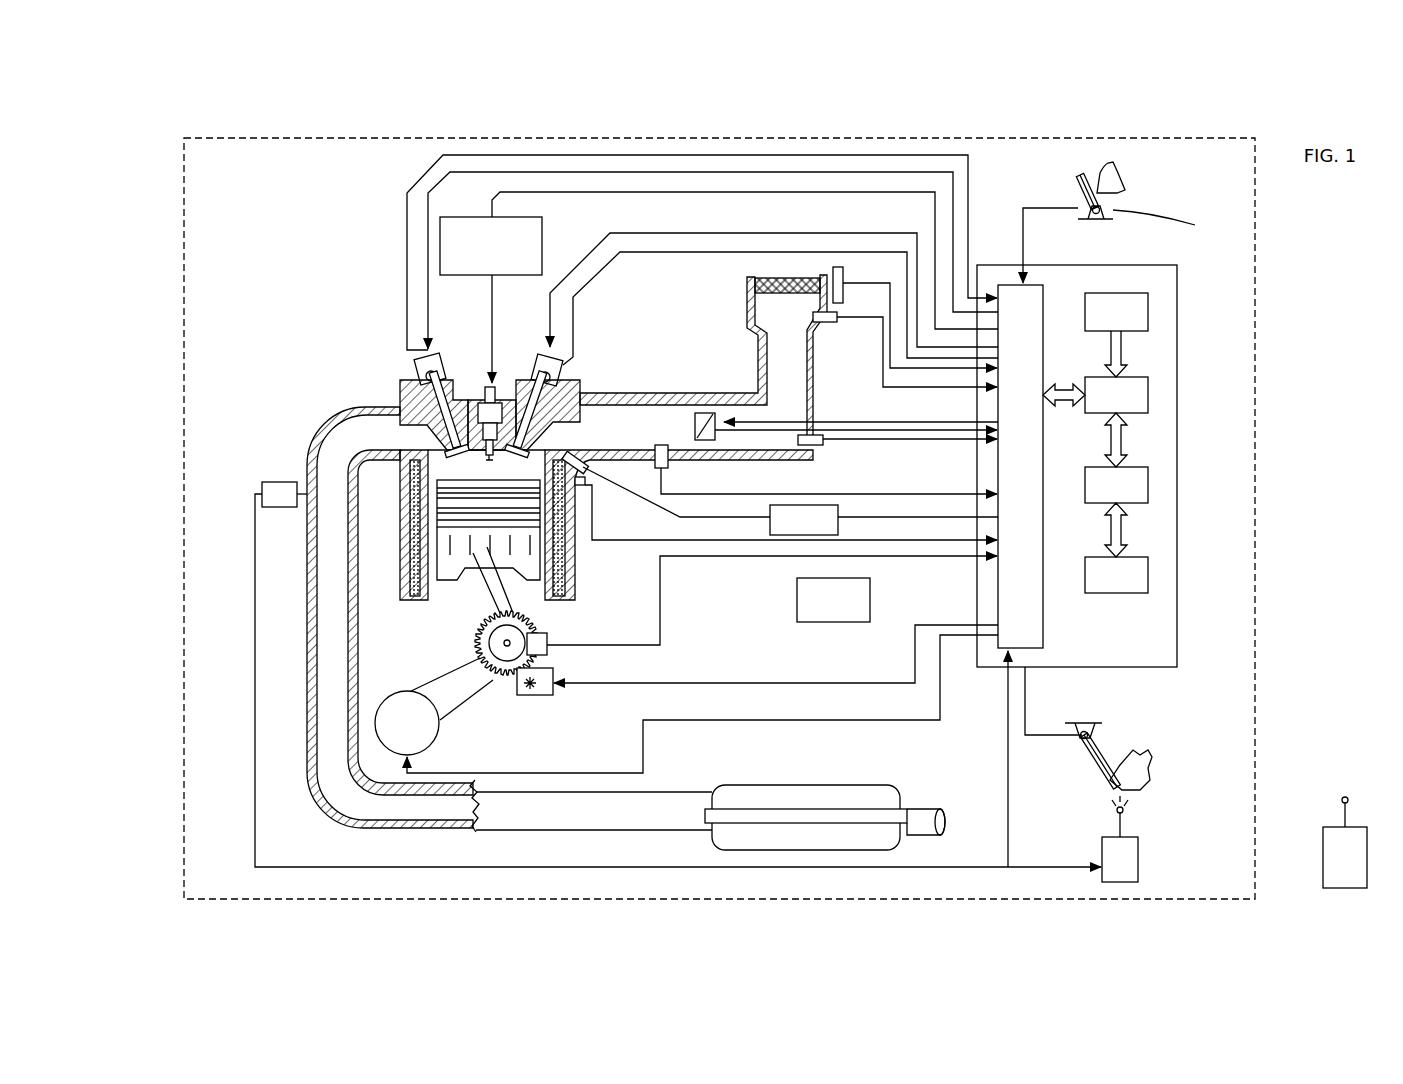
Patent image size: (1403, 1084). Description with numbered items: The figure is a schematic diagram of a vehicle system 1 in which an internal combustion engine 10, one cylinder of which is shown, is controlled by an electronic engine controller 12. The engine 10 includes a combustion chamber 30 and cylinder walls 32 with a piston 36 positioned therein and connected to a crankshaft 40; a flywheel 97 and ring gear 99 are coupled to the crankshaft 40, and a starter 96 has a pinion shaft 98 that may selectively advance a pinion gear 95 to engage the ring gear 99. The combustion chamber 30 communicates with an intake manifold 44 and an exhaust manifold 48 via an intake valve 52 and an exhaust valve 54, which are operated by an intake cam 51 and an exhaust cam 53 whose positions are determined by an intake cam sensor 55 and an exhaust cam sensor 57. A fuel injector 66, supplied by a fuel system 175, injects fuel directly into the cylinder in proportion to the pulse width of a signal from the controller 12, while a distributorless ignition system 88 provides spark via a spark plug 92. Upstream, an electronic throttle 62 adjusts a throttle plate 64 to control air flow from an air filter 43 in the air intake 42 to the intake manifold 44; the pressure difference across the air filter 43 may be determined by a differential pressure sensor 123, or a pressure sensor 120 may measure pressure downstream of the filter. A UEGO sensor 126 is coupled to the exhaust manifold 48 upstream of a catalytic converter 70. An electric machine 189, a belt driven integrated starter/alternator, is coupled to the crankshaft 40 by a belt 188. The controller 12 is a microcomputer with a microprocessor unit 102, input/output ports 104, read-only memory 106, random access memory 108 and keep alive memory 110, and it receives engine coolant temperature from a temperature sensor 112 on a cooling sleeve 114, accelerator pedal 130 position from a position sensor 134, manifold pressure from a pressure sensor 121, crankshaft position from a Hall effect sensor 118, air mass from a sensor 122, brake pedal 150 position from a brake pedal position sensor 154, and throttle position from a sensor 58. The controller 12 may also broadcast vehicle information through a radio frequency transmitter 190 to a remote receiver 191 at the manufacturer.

The vehicle system 1 is at (1262, 415).
The internal combustion engine 10 is at (338, 335).
The electronic engine controller 12 is at (1116, 437).
The combustion chamber 30 is at (487, 467).
The cylinder walls 32 is at (599, 550).
The piston 36 is at (470, 565).
The crankshaft 40 is at (517, 635).
The air intake 42 is at (703, 351).
The air filter 43 is at (750, 283).
The intake manifold 44 is at (617, 430).
The exhaust manifold 48 is at (509, 619).
The intake cam 51 is at (540, 350).
The intake valve 52 is at (560, 440).
The exhaust cam 53 is at (443, 352).
The exhaust valve 54 is at (407, 428).
The intake cam sensor 55 is at (557, 362).
The exhaust cam sensor 57 is at (415, 368).
The throttle position sensor 58 is at (735, 455).
The electronic throttle 62 is at (694, 428).
The throttle plate 64 is at (702, 414).
The fuel injector 66 is at (780, 493).
The catalytic converter 70 is at (752, 785).
The distributorless ignition system 88 is at (452, 217).
The spark plug 92 is at (493, 380).
The pinion gear 95 is at (533, 698).
The starter 96 is at (553, 692).
The flywheel 97 is at (490, 655).
The pinion shaft 98 is at (507, 676).
The ring gear 99 is at (488, 700).
The microprocessor unit 102 is at (1148, 395).
The input/output ports 104 is at (1045, 290).
The read-only memory 106 is at (1148, 310).
The random access memory 108 is at (1148, 488).
The keep alive memory 110 is at (1148, 575).
The temperature sensor 112 is at (590, 490).
The cooling sleeve 114 is at (565, 575).
The Hall effect sensor 118 is at (548, 638).
The pressure sensor 120 is at (835, 323).
The pressure sensor 121 is at (668, 466).
The air mass sensor 122 is at (822, 446).
The differential pressure sensor 123 is at (845, 278).
The UEGO sensor 126 is at (262, 490).
The accelerator pedal 130 is at (1125, 191).
The position sensor 134 is at (1171, 224).
The brake pedal 150 is at (1088, 735).
The brake pedal position sensor 154 is at (1080, 734).
The fuel system 175 is at (884, 520).
The belt 188 is at (435, 678).
The electric machine 189 is at (686, 675).
The radio frequency transmitter 190 is at (1120, 839).
The remote receiver 191 is at (1345, 842).